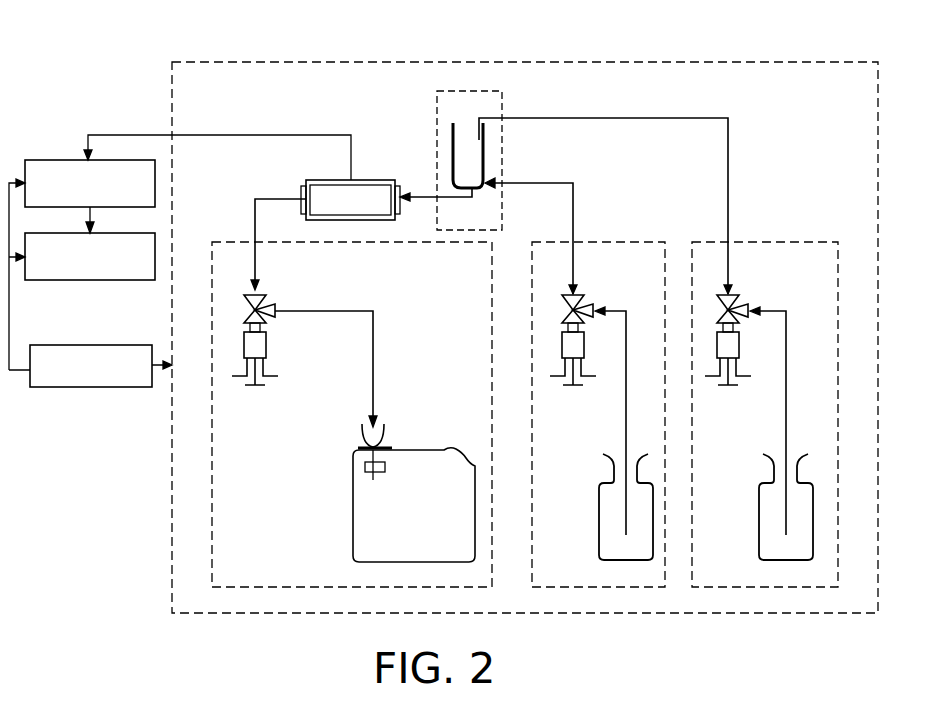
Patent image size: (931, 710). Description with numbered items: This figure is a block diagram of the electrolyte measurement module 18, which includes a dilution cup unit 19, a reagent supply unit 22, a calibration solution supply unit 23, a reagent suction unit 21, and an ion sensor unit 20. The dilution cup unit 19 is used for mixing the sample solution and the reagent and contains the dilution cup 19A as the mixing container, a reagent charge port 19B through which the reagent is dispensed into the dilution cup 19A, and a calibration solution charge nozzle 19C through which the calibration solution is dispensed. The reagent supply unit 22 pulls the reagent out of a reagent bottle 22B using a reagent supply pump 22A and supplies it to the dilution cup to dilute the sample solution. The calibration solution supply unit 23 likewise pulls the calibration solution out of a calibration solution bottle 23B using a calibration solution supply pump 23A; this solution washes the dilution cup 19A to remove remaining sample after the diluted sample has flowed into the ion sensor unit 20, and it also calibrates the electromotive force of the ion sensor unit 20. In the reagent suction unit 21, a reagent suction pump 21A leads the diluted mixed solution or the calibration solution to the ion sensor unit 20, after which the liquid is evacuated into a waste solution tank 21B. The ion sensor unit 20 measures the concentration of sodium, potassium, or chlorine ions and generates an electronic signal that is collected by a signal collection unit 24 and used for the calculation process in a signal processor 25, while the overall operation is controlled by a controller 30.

The electrolyte measurement module 18 is at (484, 62).
The dilution cup unit 19 is at (566, 185).
The dilution cup 19A is at (487, 150).
The reagent charge port 19B is at (490, 182).
The calibration solution charge nozzle 19C is at (484, 118).
The ion sensor unit 20 is at (358, 180).
The reagent suction unit 21 is at (240, 242).
The reagent suction pump 21A is at (262, 300).
The waste solution tank 21B is at (392, 450).
The reagent supply unit 22 is at (596, 242).
The reagent supply pump 22A is at (586, 301).
The reagent bottle 22B is at (601, 508).
The calibration solution supply unit 23 is at (760, 242).
The calibration solution supply pump 23A is at (738, 302).
The calibration solution bottle 23B is at (758, 508).
The signal collection unit 24 is at (72, 158).
The signal processor 25 is at (82, 280).
The controller 30 is at (96, 345).